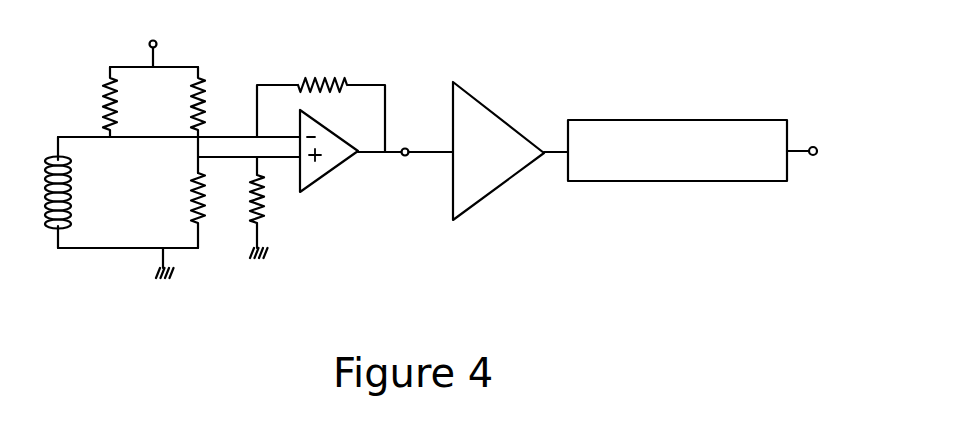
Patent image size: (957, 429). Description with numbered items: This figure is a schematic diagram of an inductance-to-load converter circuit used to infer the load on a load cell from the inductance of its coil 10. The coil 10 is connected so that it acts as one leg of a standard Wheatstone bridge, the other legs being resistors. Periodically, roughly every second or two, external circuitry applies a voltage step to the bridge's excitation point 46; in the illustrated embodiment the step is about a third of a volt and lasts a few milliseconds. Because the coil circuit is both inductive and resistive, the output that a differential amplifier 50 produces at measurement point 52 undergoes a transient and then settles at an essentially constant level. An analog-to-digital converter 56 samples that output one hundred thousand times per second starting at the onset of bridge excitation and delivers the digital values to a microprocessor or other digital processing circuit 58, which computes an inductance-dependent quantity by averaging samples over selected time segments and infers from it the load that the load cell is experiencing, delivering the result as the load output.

The coil 10 is at (70, 193).
The excitation point 46 is at (158, 43).
The differential amplifier 50 is at (335, 172).
The measurement point 52 is at (407, 157).
The analog-to-digital converter 56 is at (487, 105).
The digital processing circuit 58 is at (680, 118).